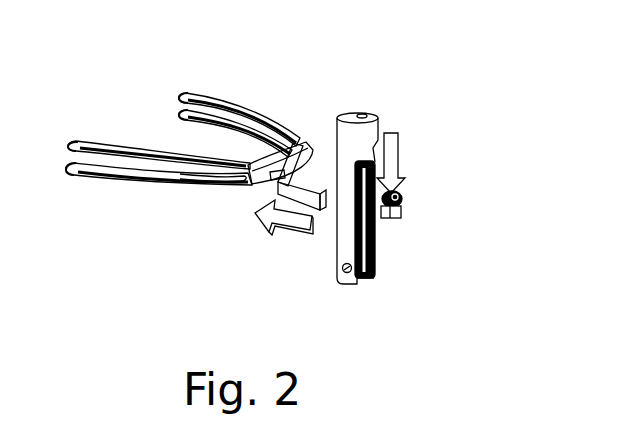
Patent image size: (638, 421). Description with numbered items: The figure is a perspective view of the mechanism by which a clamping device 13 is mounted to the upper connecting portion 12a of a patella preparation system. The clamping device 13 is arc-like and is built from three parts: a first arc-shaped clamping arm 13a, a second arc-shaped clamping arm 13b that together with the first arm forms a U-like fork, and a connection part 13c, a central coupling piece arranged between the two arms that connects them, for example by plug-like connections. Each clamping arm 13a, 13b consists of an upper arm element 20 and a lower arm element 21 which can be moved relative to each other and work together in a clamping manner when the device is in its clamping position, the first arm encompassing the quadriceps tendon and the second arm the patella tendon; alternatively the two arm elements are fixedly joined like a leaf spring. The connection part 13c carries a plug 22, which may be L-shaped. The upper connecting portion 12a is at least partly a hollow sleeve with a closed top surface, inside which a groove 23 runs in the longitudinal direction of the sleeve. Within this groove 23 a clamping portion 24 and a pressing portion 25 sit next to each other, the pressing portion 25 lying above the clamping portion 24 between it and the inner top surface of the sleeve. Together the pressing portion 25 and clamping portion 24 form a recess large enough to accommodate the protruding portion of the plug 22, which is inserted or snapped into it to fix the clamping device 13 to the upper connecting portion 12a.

The upper connecting portion 12a is at (441, 248).
The clamping device 13 is at (200, 176).
The first arc-shaped clamping arm 13a is at (85, 186).
The second arc-shaped clamping arm 13b is at (246, 91).
The connection part 13c is at (293, 139).
The upper arm element 20 is at (85, 141).
The lower arm element 21 is at (221, 130).
The plug 22 is at (314, 242).
The groove 23 is at (366, 281).
The clamping portion 24 is at (396, 216).
The pressing portion 25 is at (400, 197).